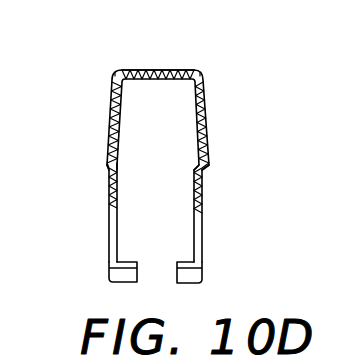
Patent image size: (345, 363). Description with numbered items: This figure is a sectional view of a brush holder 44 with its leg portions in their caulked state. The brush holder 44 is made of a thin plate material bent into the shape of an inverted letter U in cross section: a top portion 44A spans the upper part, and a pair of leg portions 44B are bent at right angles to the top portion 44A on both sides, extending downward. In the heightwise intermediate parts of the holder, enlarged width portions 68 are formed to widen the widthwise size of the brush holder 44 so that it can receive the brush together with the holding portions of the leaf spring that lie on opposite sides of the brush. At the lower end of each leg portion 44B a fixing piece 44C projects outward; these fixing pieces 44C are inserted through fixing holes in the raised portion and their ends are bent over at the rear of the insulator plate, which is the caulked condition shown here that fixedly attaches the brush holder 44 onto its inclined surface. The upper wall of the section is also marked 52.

The brush holder 44 is at (230, 132).
The top wall 52 is at (169, 69).
The top portion 44A is at (195, 71).
The leg portions 44B is at (109, 91).
The enlarged width portions 68 is at (198, 140).
The fixing piece 44C is at (109, 242).